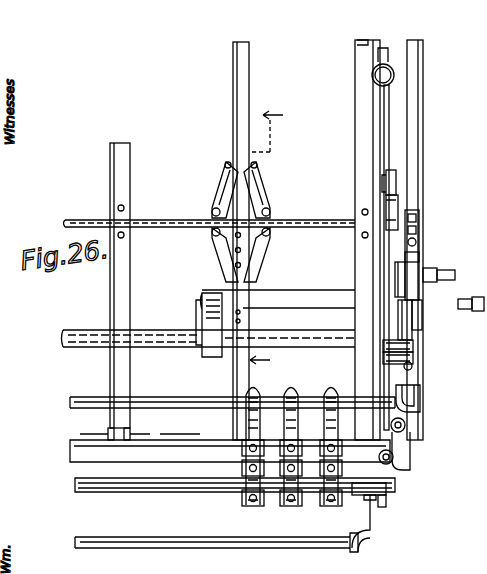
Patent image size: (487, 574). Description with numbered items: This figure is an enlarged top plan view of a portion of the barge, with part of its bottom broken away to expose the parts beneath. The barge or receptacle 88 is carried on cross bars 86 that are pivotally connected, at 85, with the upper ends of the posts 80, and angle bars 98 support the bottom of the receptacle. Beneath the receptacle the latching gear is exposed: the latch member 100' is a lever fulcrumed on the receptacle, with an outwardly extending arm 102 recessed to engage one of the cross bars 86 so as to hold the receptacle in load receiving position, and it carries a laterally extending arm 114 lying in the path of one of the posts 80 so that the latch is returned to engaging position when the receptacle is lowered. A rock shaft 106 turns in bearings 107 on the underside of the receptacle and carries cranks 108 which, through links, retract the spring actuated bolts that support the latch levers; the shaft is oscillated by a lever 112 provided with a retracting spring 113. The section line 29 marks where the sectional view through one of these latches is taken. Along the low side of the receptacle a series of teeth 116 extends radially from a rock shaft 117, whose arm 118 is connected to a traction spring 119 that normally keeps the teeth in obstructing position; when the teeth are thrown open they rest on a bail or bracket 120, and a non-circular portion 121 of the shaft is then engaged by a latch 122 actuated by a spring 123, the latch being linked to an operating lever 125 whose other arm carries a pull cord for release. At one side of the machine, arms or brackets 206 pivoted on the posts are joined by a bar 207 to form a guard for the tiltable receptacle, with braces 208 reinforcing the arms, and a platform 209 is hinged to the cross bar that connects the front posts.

The section line 29— 29 is at (267, 234).
The posts 80 is at (159, 328).
The pivotal connection 85 is at (423, 327).
The cross bars 86 is at (420, 140).
The barge or receptacle 88 is at (368, 45).
The angle bars 98 is at (236, 144).
The latch member 100' is at (278, 287).
The outwardly extending arm 102 is at (444, 252).
The rock shaft 106 is at (162, 218).
The bearings 107 is at (270, 240).
The cranks 108 is at (263, 205).
The lever 112 is at (398, 197).
The retracting spring 113 is at (396, 178).
The laterally extending arm 114 is at (206, 358).
The teeth 116 is at (265, 392).
The rock shaft 117 is at (112, 490).
The arm 118 is at (410, 462).
The traction spring 119 is at (413, 366).
The bail or bracket 120 is at (206, 539).
The non-circular portion 121 is at (440, 272).
The latch 122 is at (388, 510).
The spring 123 is at (392, 472).
The operating lever 125 is at (389, 120).
The arms or brackets 206 is at (420, 390).
The bar 207 is at (95, 400).
The braces 208 is at (414, 352).
The platform 209 is at (412, 262).